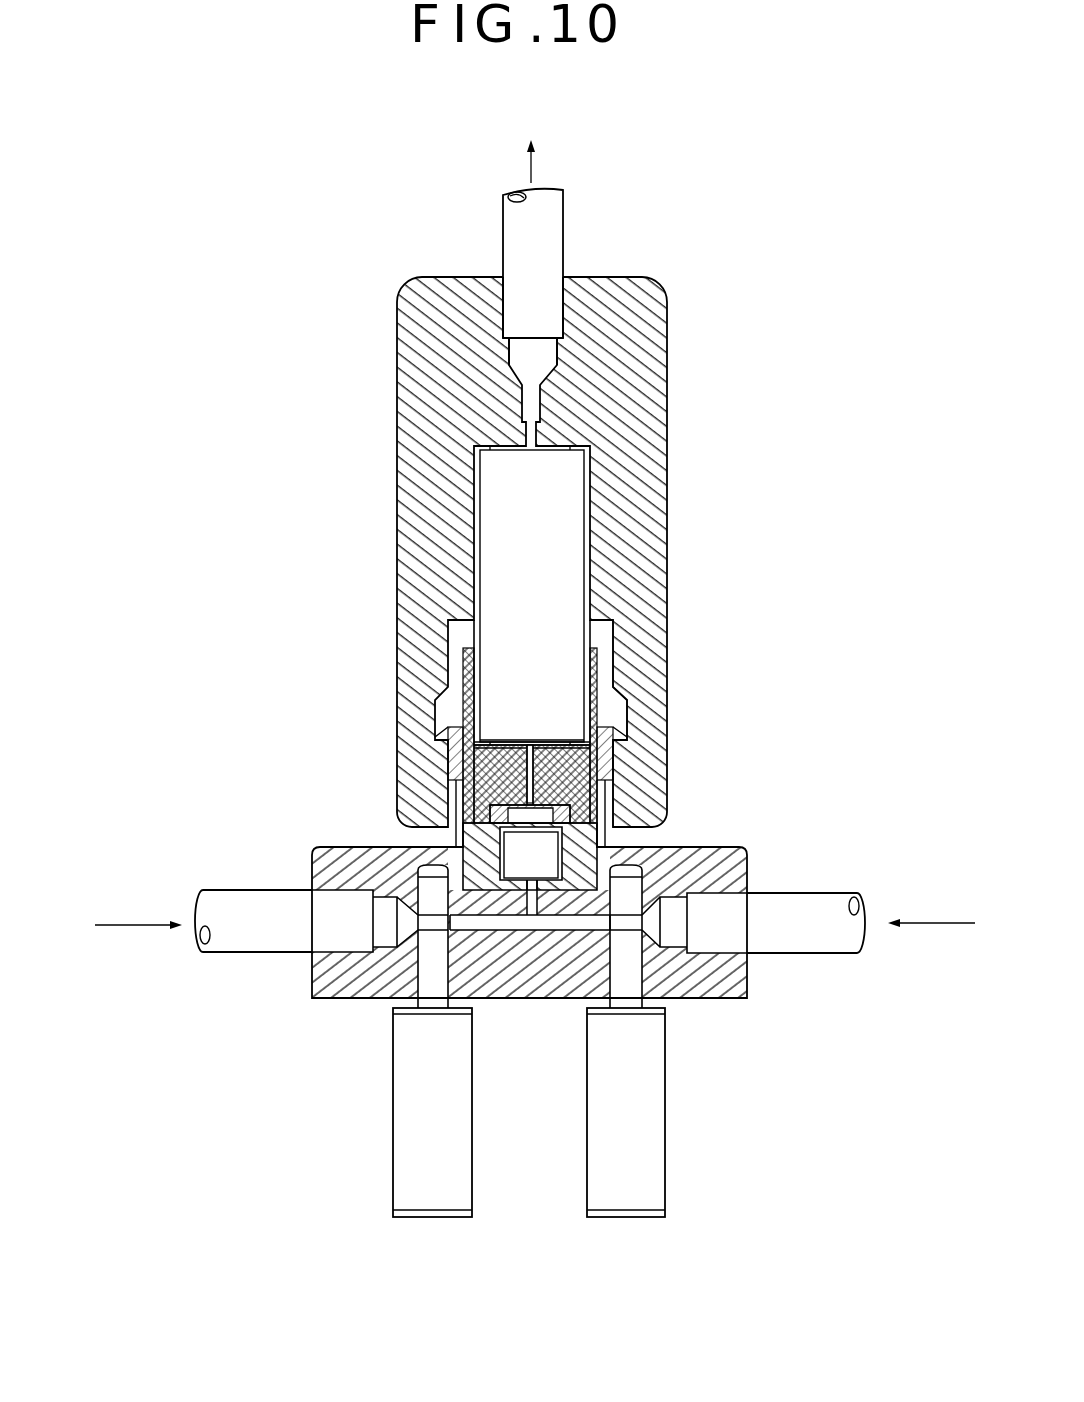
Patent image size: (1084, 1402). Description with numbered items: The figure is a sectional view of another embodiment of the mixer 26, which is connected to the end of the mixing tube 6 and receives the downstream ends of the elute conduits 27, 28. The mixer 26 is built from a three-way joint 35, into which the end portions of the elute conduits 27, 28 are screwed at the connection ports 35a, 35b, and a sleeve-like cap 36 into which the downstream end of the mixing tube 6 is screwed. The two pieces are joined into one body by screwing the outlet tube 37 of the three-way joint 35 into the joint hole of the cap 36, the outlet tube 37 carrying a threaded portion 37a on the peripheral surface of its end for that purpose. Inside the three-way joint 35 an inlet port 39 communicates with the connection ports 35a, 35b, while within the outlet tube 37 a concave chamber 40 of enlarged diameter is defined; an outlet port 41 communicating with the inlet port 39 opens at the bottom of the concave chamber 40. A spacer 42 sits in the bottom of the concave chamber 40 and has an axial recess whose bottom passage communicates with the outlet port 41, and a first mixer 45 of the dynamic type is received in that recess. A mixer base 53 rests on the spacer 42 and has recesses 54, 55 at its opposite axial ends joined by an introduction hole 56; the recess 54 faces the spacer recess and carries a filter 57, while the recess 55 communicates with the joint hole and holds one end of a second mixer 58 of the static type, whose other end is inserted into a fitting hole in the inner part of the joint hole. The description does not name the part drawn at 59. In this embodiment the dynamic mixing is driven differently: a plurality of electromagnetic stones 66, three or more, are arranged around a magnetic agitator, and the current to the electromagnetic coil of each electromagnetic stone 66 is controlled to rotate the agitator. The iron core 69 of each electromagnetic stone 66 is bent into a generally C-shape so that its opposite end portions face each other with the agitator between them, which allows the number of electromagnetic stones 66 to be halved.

The mixing tube 6 is at (548, 232).
The mixer 26 is at (338, 331).
The elute conduit 27 is at (807, 908).
The elute conduit 28 is at (240, 905).
The three-way joint 35 is at (730, 969).
The connection port 35a is at (673, 945).
The connection port 35b is at (385, 938).
The sleeve-like cap 36 is at (609, 640).
The outlet tube 37 is at (600, 775).
The threaded portion 37a is at (432, 757).
The inlet port 39 is at (470, 923).
The concave chamber 40 is at (607, 842).
The outlet port 41 is at (532, 907).
The spacer 42 is at (612, 836).
The first mixer 45 is at (516, 862).
The mixer base 53 is at (485, 770).
The recess 54 is at (495, 743).
The recess 55 is at (472, 688).
The introduction hole 56 is at (530, 746).
The filter 57 is at (607, 803).
The second mixer 58 is at (553, 489).
The cylinder wall 59 is at (476, 508).
The electromagnetic stone 66 is at (565, 1224).
The iron core 69 is at (433, 997).